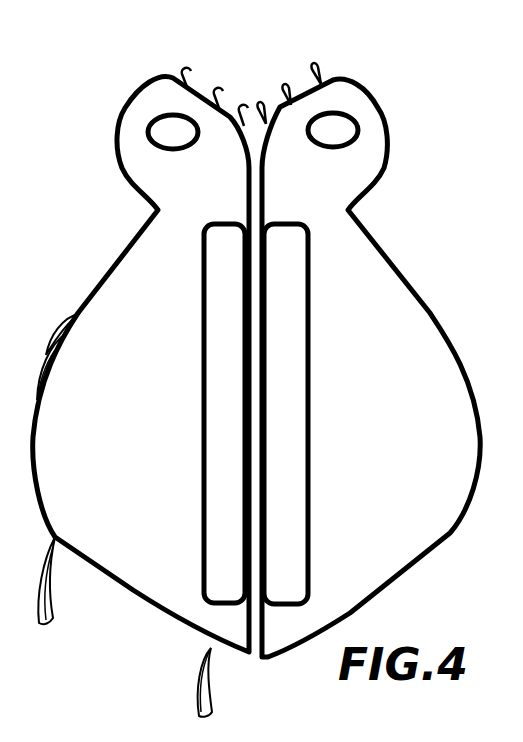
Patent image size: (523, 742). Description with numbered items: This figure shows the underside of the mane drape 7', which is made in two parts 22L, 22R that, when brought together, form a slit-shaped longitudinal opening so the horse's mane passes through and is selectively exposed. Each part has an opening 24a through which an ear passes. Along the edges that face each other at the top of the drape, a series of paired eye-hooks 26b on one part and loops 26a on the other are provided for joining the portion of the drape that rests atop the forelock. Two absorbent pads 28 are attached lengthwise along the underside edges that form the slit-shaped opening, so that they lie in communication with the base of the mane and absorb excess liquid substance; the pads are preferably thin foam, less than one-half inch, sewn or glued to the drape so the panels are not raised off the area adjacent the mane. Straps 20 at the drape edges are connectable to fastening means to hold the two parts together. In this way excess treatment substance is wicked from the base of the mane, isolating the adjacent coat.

The mane drape 7' is at (251, 370).
The straps 20 is at (197, 676).
The right part of mane drape 22R is at (172, 435).
The left part of mane drape 22L is at (387, 435).
The openings 24a is at (357, 120).
The loops 26a is at (284, 88).
The eye-hooks 26b is at (183, 70).
The absorbent pads 28 is at (290, 255).